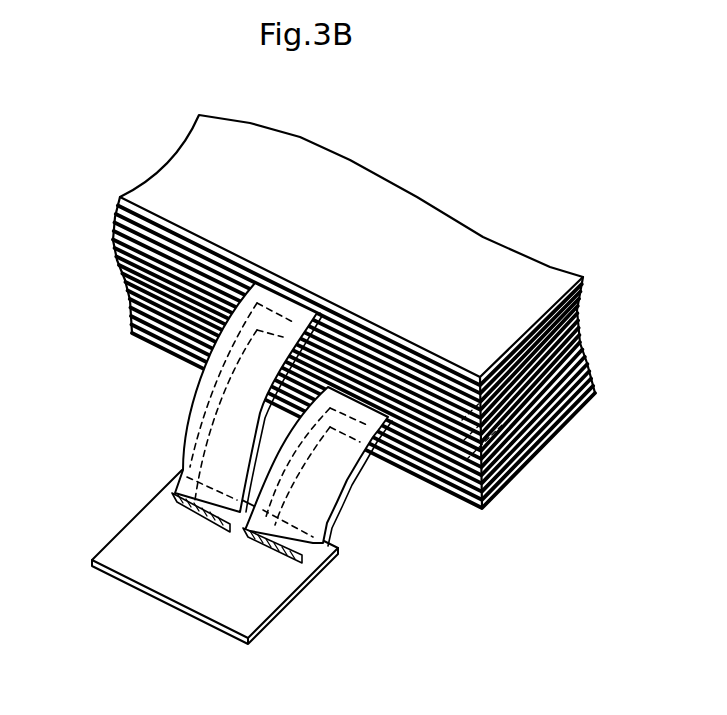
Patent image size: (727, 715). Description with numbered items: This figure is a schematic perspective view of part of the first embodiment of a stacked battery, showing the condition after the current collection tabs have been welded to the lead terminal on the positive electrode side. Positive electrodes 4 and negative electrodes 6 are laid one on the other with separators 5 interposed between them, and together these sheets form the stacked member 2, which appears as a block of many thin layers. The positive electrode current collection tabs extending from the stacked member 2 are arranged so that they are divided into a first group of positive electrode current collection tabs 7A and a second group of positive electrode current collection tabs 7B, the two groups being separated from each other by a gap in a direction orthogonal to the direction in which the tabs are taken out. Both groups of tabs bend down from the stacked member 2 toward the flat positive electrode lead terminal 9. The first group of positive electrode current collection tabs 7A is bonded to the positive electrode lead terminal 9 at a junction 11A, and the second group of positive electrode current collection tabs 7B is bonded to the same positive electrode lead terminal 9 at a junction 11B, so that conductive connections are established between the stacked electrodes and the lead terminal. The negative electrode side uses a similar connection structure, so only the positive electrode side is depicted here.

The stacked member 2 is at (483, 233).
The positive electrode 4 is at (492, 493).
The separator 5 is at (518, 467).
The negative electrode 6 is at (550, 442).
The first group of positive electrode current collection tabs 7A is at (365, 502).
The second group of positive electrode current collection tabs 7B is at (168, 407).
The positive electrode lead terminal 9 is at (197, 586).
The junction 11A is at (307, 560).
The junction 11B is at (170, 495).